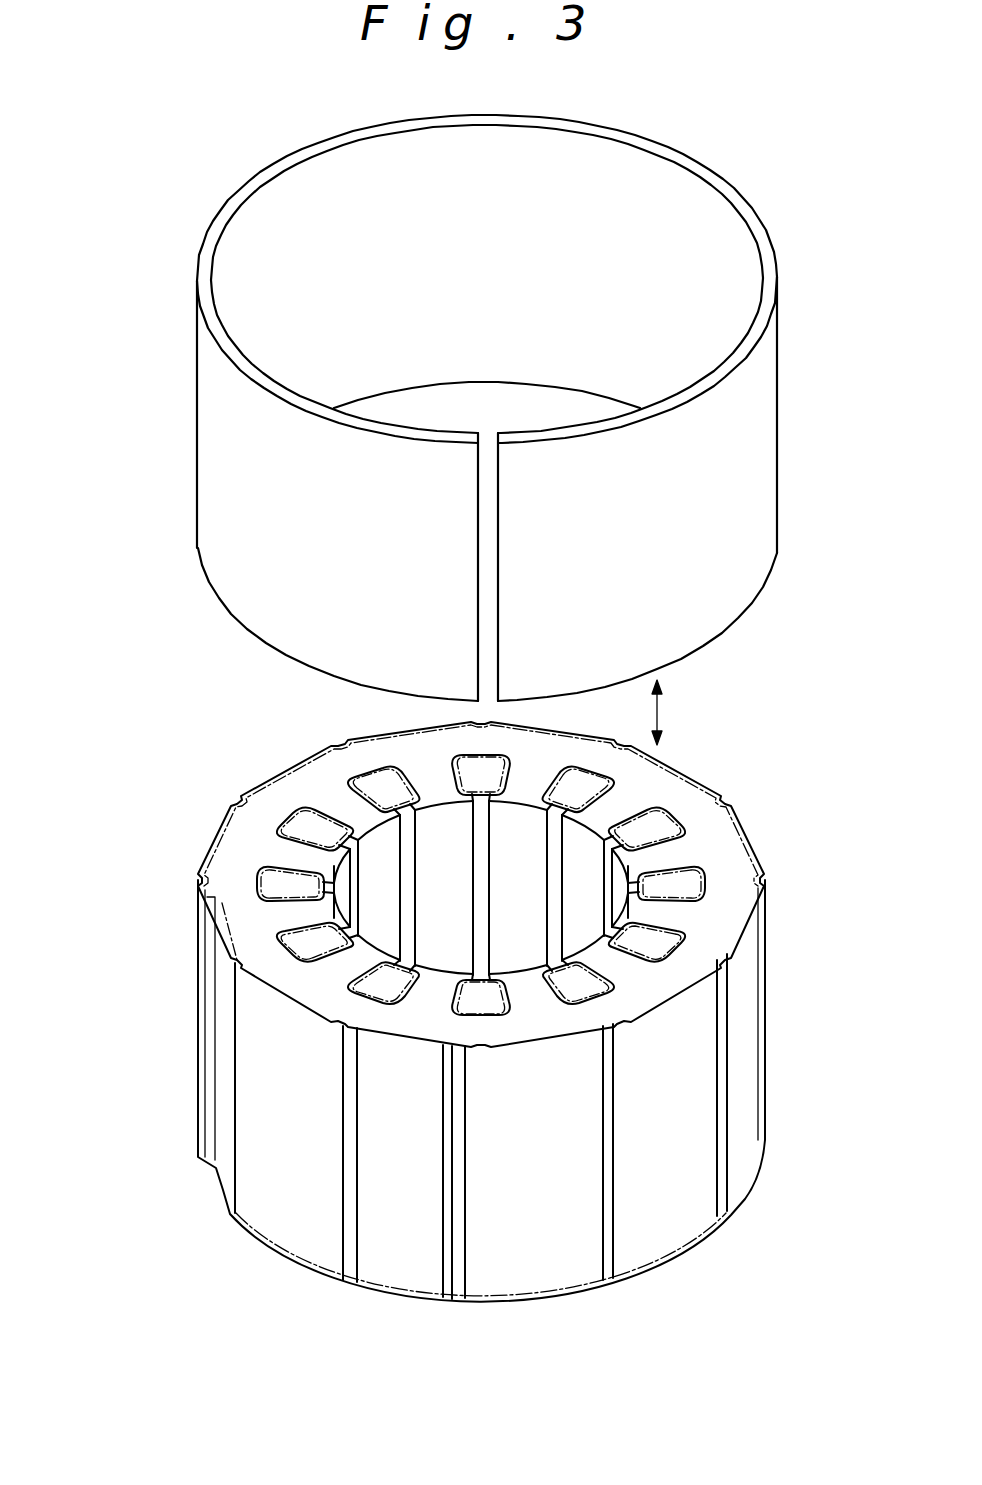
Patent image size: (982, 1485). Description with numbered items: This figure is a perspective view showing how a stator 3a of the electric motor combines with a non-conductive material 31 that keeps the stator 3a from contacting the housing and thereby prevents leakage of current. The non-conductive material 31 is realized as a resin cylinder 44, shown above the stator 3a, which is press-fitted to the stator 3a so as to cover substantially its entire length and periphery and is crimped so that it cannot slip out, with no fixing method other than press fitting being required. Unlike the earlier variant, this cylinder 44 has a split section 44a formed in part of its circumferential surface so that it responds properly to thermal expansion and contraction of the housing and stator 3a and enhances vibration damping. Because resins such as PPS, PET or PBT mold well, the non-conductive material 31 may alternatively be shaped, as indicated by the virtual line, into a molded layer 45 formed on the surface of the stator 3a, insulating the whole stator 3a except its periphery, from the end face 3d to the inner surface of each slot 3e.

The cylinder 44 is at (516, 408).
The split section 44a is at (497, 581).
The stator 3a is at (452, 1010).
The end face 3d is at (708, 855).
The slot 3e is at (665, 945).
The molded layer 45 is at (211, 840).
The non-conductive material 31 is at (204, 864).